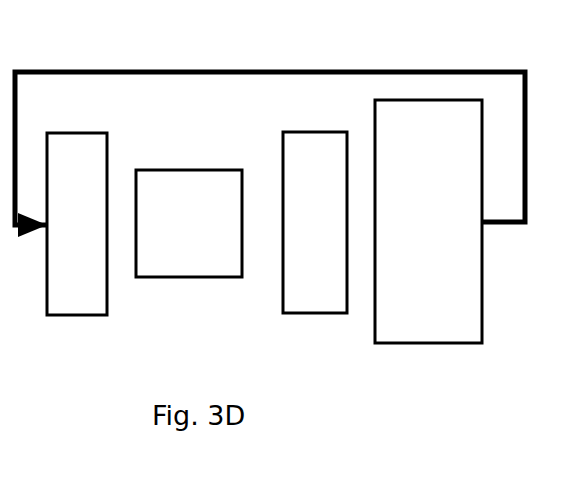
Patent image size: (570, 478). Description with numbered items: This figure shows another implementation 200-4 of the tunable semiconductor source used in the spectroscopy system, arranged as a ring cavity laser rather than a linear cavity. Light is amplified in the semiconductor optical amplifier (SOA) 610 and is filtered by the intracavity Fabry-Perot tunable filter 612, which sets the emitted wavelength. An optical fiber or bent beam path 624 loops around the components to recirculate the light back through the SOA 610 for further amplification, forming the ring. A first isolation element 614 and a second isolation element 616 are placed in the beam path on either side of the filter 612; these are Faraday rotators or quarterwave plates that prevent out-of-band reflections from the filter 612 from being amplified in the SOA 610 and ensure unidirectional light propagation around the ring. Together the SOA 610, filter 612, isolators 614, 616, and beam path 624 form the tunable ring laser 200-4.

The bent beam path 624 is at (382, 72).
The first isolation element 614 is at (107, 137).
The semiconductor optical amplifier 610 is at (160, 170).
The second isolation element 616 is at (315, 132).
The Fabry-Perot tunable filter 612 is at (428, 100).
The tunable semiconductor source implementation 200-4 is at (68, 339).